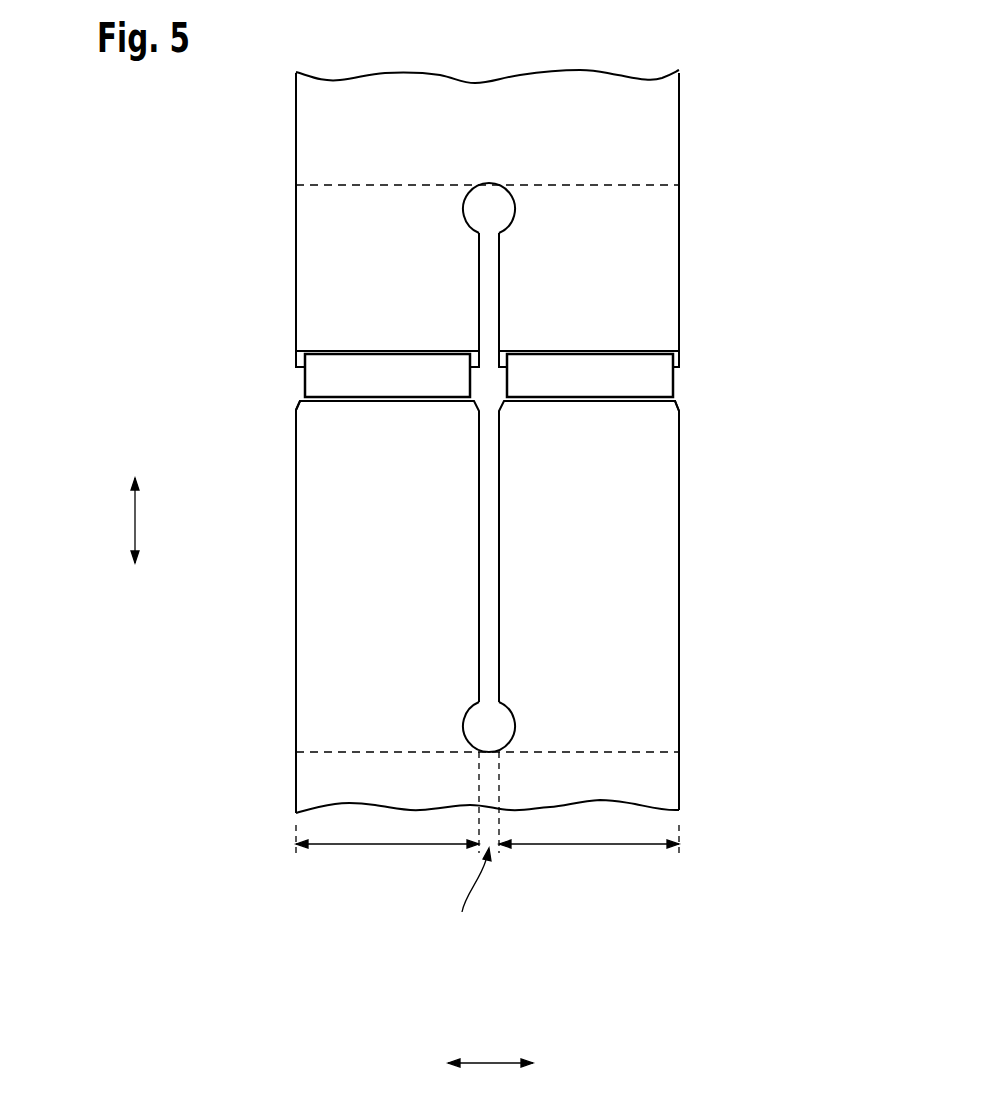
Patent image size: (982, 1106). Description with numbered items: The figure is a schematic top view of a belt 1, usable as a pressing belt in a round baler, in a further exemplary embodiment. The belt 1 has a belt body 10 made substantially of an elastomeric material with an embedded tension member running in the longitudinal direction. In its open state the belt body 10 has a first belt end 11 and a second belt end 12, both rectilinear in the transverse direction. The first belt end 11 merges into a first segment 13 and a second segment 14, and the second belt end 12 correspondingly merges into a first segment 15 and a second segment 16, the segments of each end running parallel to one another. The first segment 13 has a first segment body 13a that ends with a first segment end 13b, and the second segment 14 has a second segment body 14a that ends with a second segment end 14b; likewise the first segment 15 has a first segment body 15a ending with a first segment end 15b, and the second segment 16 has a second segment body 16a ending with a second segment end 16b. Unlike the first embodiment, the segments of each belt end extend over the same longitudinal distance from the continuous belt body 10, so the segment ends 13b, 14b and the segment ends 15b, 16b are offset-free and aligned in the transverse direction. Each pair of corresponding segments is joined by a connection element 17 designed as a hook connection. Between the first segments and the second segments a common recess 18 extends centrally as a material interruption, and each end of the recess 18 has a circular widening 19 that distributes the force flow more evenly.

The belt 1 is at (165, 115).
The belt body 10 is at (647, 145).
The first belt end 11 is at (477, 226).
The second belt end 12 is at (477, 603).
The first segment of the first belt end 13 is at (337, 297).
The first segment body of the first belt end 13a is at (322, 213).
The first segment end of the first belt end 13b is at (280, 361).
The second segment of the first belt end 14 is at (647, 258).
The second segment body of the first belt end 14a is at (650, 204).
The second segment end of the first belt end 14b is at (696, 353).
The first segment of the second belt end 15 is at (345, 518).
The first segment body of the second belt end 15a is at (312, 663).
The first segment end of the second belt end 15b is at (279, 400).
The second segment of the second belt end 16 is at (647, 487).
The second segment body of the second belt end 16a is at (664, 705).
The second segment end of the second belt end 16b is at (698, 402).
The connection element 17 is at (368, 363).
The recess 18 is at (486, 452).
The circular widening 19 is at (489, 202).